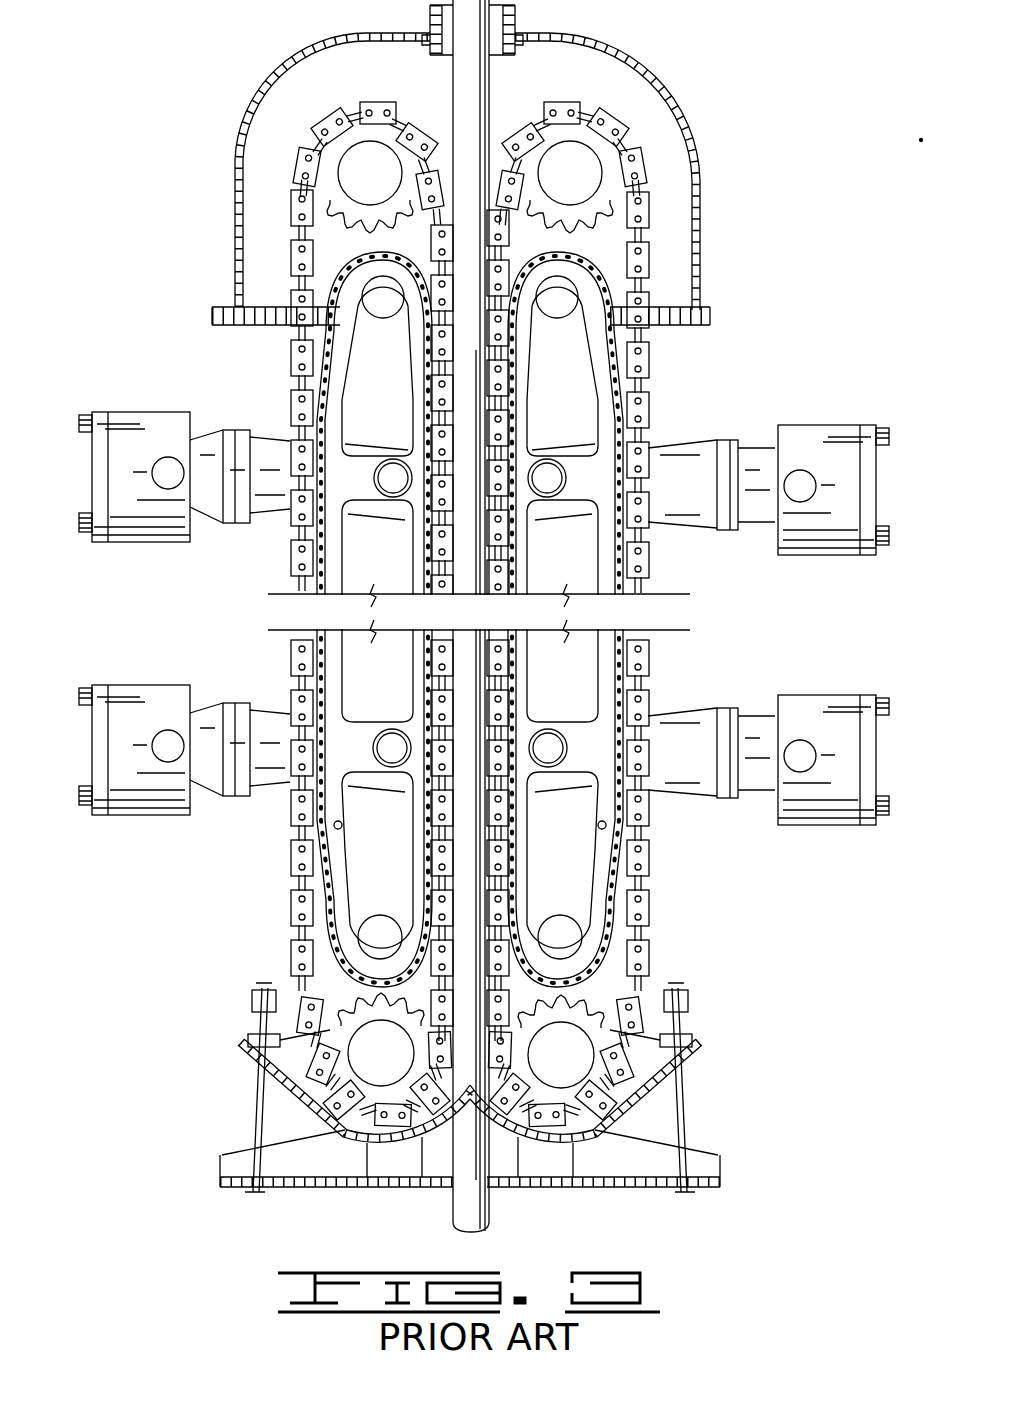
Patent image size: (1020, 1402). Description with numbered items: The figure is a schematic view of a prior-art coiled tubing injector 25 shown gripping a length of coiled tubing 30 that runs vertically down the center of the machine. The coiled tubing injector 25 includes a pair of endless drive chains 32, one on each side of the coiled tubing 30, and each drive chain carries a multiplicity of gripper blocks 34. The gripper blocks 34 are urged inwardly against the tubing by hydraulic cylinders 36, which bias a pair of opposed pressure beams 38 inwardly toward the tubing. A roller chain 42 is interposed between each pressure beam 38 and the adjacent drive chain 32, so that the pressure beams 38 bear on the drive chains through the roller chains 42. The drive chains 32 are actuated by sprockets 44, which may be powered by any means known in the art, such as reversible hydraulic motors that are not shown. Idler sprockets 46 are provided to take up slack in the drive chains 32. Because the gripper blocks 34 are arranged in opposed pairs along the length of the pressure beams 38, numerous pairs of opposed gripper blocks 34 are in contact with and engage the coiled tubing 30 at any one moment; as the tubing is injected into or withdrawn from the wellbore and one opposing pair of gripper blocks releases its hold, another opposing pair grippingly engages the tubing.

The coiled tubing injector 25 is at (770, 274).
The coiled tubing 30 is at (489, 85).
The endless drive chains 32 is at (623, 147).
The gripper blocks 34 is at (648, 213).
The hydraulic cylinders 36 is at (132, 412).
The pressure beams 38 is at (357, 470).
The roller chain 42 is at (320, 592).
The sprockets 44 is at (322, 190).
The idler sprockets 46 is at (365, 1005).